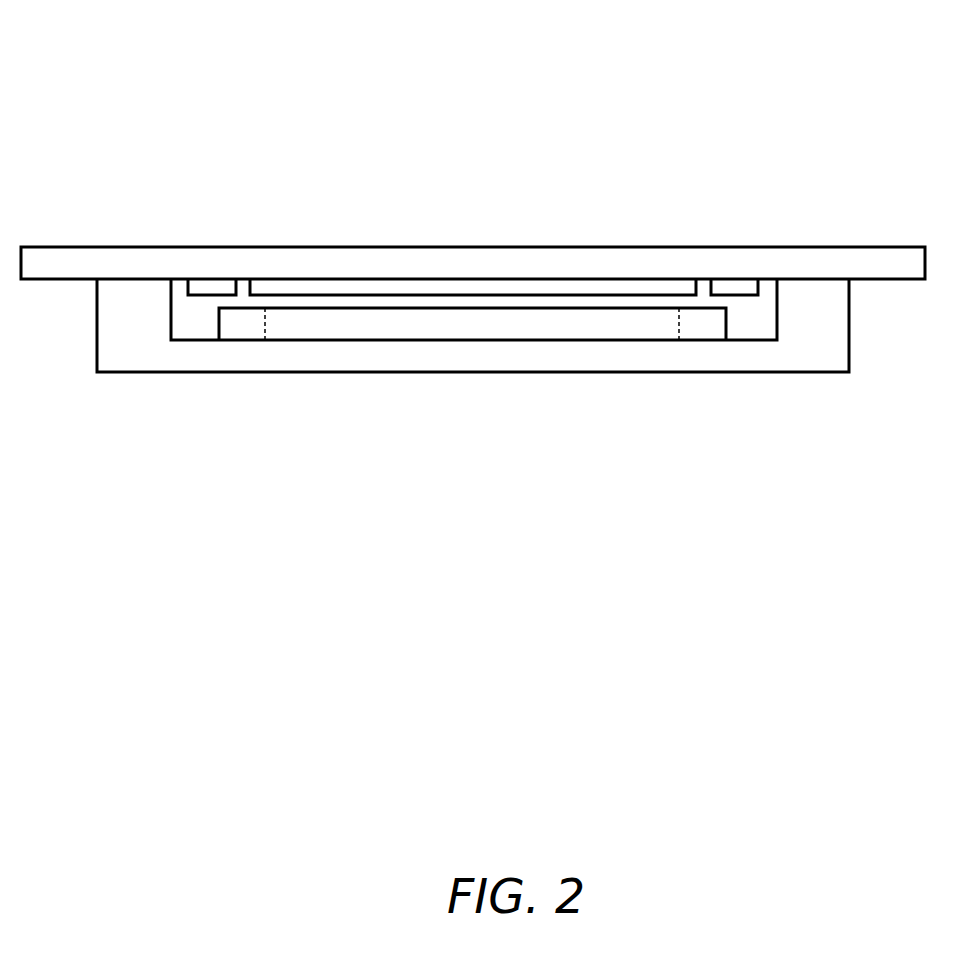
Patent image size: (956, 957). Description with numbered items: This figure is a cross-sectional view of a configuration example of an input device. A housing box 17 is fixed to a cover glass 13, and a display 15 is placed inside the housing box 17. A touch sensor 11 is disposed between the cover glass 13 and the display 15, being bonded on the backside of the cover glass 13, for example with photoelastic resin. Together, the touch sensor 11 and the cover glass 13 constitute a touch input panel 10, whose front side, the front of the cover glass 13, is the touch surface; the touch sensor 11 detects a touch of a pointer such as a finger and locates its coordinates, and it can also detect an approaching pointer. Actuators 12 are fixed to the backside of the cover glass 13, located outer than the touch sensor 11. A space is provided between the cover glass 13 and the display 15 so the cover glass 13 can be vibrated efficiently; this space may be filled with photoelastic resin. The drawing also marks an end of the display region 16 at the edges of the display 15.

The touch input panel 10 is at (75, 287).
The touch sensor 11 is at (396, 277).
The actuator 12 is at (198, 278).
The cover glass 13 is at (548, 246).
The display 15 is at (466, 340).
The end of display region 16 is at (680, 327).
The housing box 17 is at (133, 372).